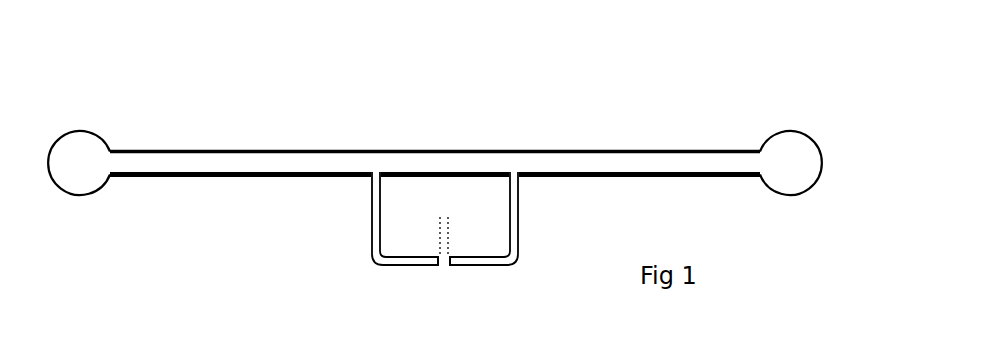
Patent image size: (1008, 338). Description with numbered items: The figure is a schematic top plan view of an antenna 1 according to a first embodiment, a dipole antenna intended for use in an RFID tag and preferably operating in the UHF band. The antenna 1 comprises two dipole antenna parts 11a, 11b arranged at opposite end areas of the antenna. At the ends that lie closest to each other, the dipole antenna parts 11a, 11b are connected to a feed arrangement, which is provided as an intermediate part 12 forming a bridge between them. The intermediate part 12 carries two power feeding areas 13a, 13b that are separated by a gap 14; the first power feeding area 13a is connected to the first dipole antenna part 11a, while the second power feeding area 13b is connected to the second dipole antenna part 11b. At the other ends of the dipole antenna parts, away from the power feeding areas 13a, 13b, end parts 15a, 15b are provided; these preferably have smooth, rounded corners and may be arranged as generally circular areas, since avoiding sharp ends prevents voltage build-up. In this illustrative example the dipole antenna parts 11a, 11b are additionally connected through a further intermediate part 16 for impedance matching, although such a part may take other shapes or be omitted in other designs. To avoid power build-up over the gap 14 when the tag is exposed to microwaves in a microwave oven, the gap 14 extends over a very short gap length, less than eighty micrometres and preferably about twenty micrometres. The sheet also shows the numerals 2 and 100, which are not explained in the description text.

The antenna 1 is at (331, 129).
The second element 2 is at (850, 337).
The first dipole antenna part 11a is at (190, 165).
The second dipole antenna part 11b is at (597, 165).
The intermediate part 12 is at (372, 205).
The first power feeding area 13a is at (437, 270).
The second power feeding area 13b is at (452, 270).
The gap 14 is at (447, 275).
The first end part 15a is at (91, 160).
The second end part 15b is at (792, 160).
The further intermediate part 16 is at (428, 162).
The assembly 100 is at (170, 337).